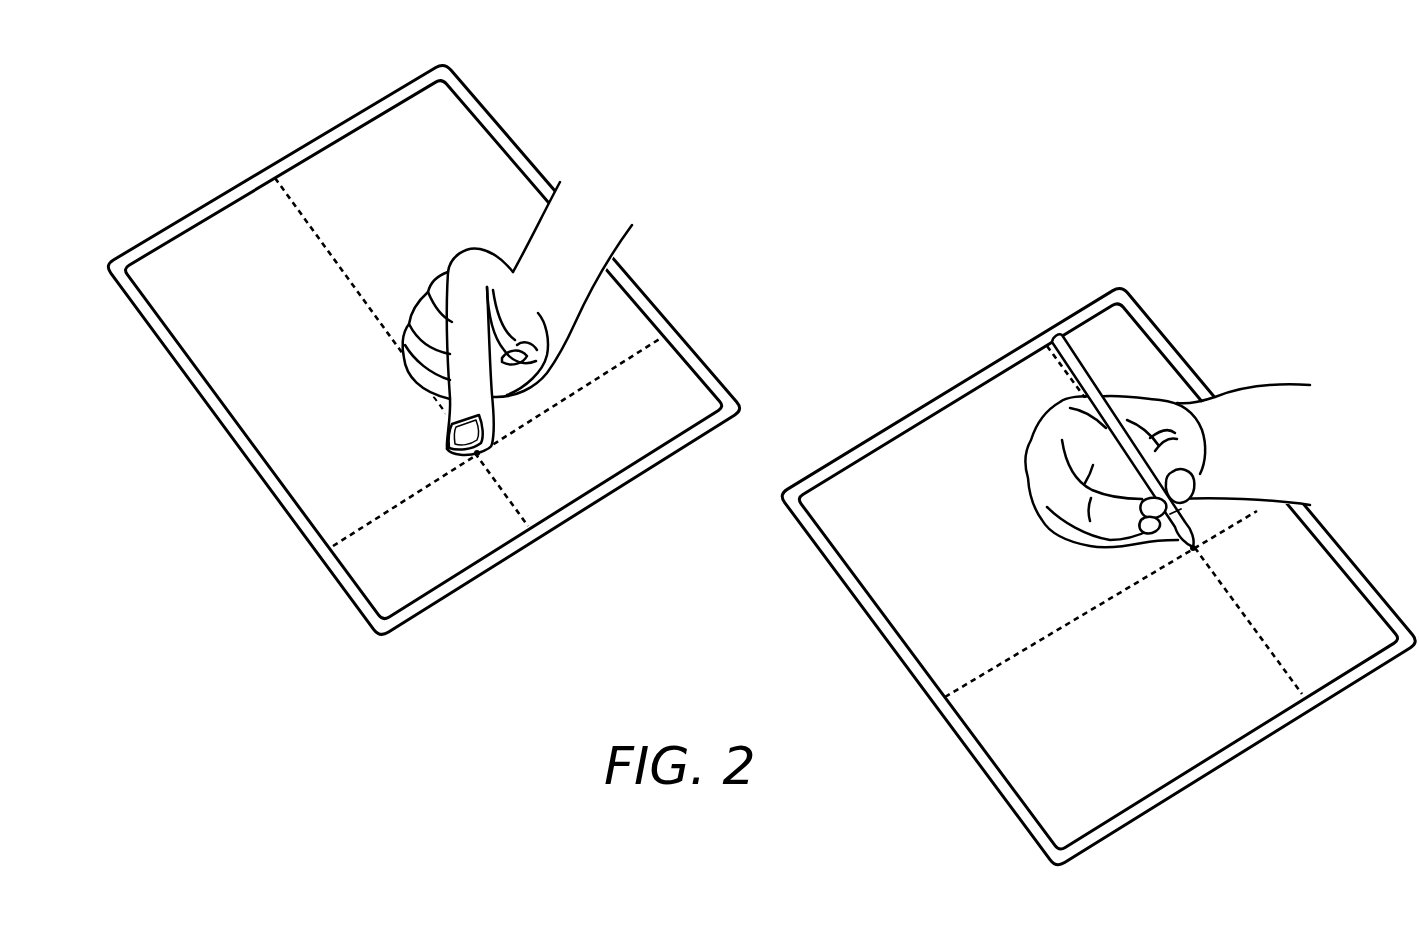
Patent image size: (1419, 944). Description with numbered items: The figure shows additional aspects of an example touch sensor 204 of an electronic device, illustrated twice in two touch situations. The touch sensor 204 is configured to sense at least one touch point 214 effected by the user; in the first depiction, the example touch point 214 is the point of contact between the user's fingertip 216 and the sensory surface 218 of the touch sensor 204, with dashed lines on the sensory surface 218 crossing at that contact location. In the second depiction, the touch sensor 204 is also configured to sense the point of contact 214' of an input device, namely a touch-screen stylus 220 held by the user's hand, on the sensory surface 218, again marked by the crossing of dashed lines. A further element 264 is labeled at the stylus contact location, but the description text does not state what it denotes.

The touch sensor 204 is at (102, 201).
The touch point 214 is at (461, 491).
The point of contact 214' is at (1178, 588).
The fingertip 216 is at (450, 442).
The sensory surface 218 is at (323, 349).
The touch-screen stylus 220 is at (1070, 357).
The touch point of stylus 264 is at (1207, 540).